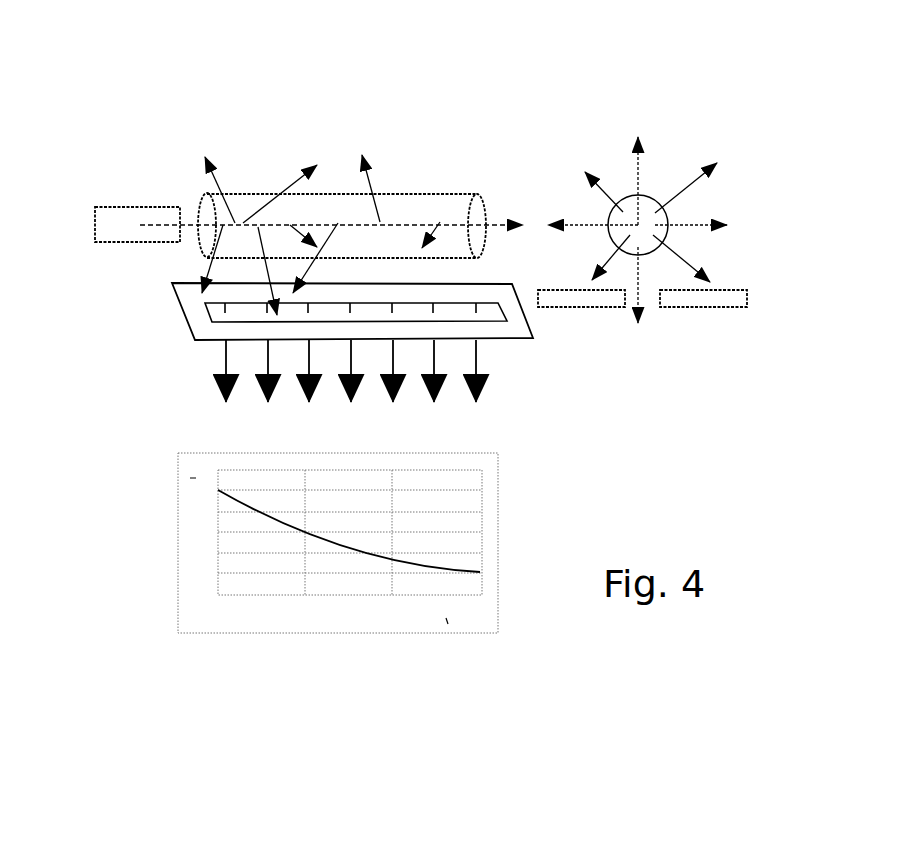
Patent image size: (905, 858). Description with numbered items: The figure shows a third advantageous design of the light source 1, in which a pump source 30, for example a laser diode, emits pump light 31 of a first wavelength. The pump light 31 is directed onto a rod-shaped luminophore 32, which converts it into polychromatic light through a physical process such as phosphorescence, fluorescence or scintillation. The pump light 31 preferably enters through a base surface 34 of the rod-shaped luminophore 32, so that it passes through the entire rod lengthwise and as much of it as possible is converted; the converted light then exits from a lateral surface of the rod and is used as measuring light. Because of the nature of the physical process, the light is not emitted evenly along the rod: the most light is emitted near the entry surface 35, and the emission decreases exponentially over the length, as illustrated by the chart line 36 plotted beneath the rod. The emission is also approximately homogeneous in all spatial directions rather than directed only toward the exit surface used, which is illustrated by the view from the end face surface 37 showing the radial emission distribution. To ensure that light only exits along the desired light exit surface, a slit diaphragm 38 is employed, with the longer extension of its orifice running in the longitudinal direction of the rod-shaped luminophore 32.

The light source 1 is at (166, 382).
The pump source 30 is at (113, 207).
The pump light 31 is at (160, 232).
The rod-shaped luminophore 32 is at (418, 192).
The base surface 34 is at (208, 207).
The entry surface 35 is at (292, 183).
The chart line 36 is at (343, 546).
The end face surface 37 is at (657, 200).
The slit diaphragm 38 is at (515, 340).